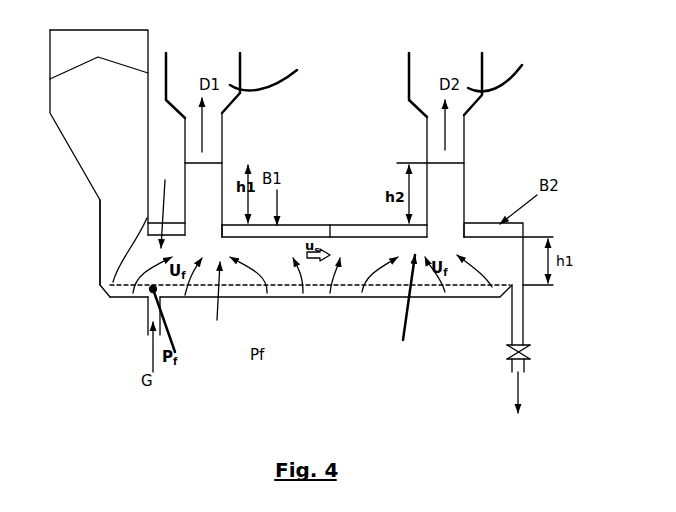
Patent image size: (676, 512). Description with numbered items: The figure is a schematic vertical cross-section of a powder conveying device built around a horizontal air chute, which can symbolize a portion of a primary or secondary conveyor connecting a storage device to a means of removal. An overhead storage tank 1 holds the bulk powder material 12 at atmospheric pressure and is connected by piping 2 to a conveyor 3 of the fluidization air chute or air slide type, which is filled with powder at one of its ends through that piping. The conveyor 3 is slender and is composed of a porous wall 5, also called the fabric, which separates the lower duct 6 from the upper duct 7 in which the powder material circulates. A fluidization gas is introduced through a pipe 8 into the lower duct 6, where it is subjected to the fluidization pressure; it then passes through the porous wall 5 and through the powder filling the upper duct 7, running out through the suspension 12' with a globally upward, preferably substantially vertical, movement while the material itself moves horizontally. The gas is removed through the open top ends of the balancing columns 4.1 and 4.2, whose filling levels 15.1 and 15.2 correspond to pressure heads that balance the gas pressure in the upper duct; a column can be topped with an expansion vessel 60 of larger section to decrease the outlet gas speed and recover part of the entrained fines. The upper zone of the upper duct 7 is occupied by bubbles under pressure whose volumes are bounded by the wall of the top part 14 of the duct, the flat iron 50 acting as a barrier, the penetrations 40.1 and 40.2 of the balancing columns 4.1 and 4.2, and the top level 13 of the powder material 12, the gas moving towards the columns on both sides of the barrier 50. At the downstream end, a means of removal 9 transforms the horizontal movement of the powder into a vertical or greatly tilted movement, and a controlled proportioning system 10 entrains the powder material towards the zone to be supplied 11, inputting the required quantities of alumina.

The overhead storage tank 1 is at (88, 133).
The piping 2 is at (120, 218).
The conveyor 3 is at (308, 160).
The balancing column 4.1 is at (222, 145).
The balancing column 4.2 is at (465, 148).
The porous wall 5 is at (342, 285).
The lower duct 6 is at (285, 290).
The upper duct 7 is at (215, 298).
The pipe 8 is at (148, 312).
The means of removal 9 is at (525, 317).
The controlled proportioning system 10 is at (532, 350).
The zone to be supplied 11 is at (533, 397).
The bulk powder material 12 is at (159, 180).
The suspension 12' is at (403, 306).
The top level of the powder material 13 is at (357, 235).
The top part of the upper duct 14 is at (288, 225).
The filling level 15.1 is at (222, 163).
The filling level 15.2 is at (464, 163).
The penetration of the balancing column 40.1 is at (224, 226).
The penetration of the balancing column 40.2 is at (465, 223).
The flat iron 50 is at (329, 218).
The expansion vessel 60 is at (390, 71).